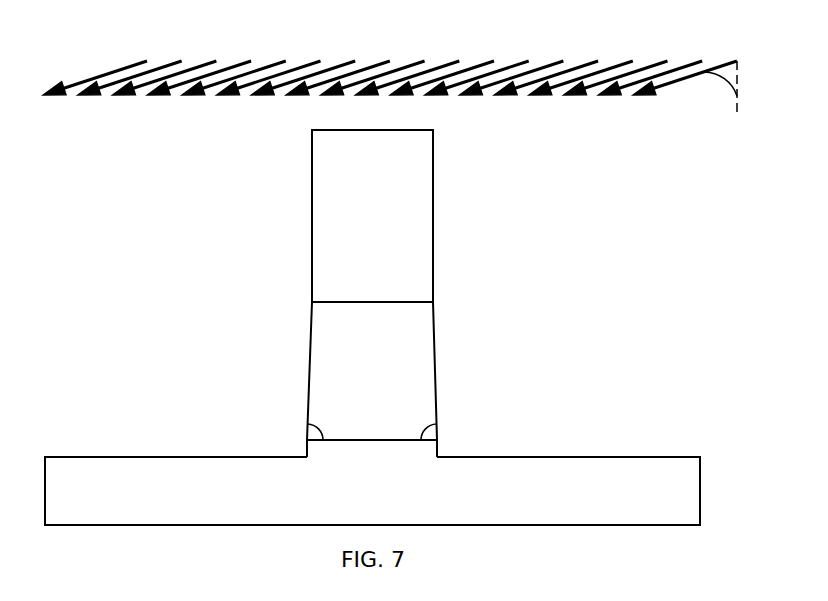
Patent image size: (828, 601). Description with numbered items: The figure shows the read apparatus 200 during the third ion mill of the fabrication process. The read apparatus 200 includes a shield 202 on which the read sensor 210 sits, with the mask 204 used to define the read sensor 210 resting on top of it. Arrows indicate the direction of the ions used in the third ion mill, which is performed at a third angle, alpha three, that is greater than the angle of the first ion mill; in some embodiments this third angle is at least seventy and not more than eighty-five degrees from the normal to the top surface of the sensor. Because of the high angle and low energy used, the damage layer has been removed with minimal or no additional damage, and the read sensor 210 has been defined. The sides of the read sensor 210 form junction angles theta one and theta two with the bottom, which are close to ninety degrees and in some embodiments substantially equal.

The read apparatus 200 is at (393, 38).
The mask 204 is at (372, 216).
The read sensor 210 is at (372, 379).
The shield 202 is at (372, 491).